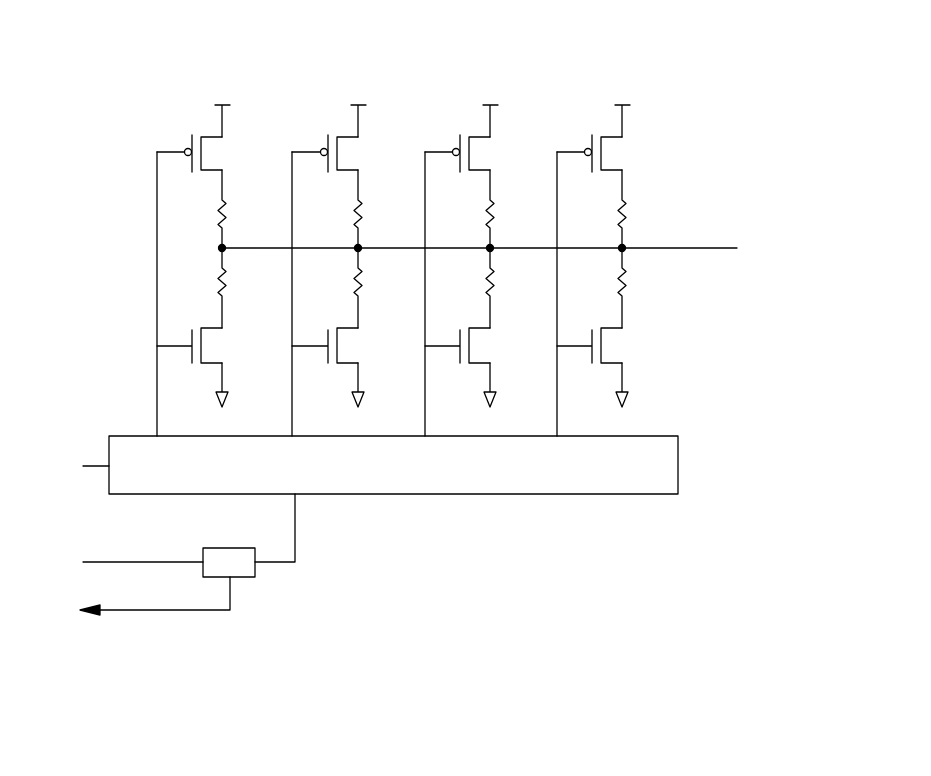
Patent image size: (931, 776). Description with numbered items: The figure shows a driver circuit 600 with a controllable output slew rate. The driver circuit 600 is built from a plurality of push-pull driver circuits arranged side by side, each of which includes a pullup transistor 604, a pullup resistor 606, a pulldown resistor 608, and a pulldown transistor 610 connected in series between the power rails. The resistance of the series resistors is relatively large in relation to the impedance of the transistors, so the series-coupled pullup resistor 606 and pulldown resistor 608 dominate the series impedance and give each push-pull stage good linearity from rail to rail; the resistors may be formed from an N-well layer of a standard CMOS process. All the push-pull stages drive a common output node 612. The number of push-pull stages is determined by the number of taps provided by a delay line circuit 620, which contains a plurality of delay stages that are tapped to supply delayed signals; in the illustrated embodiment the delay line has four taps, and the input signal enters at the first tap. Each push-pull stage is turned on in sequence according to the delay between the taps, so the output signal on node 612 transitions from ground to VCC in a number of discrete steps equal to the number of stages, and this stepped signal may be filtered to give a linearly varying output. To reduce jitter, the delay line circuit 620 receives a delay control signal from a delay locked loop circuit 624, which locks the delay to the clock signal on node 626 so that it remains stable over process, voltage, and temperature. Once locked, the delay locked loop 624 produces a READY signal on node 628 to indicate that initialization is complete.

The driver circuit 600 is at (762, 52).
The pullup transistor 604 is at (225, 154).
The pullup resistor 606 is at (232, 218).
The pulldown resistor 608 is at (232, 283).
The pulldown transistor 610 is at (232, 347).
The output node 612 is at (722, 248).
The delay line circuit 620 is at (657, 494).
The delay locked loop circuit 624 is at (205, 548).
The clock signal node 626 is at (145, 562).
The READY signal node 628 is at (210, 612).